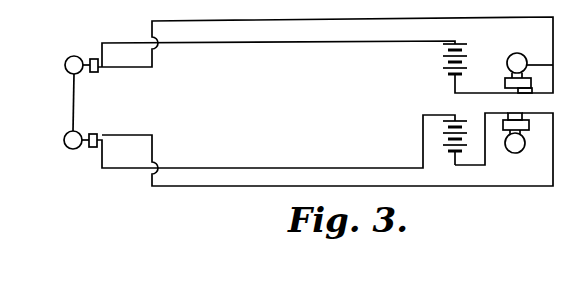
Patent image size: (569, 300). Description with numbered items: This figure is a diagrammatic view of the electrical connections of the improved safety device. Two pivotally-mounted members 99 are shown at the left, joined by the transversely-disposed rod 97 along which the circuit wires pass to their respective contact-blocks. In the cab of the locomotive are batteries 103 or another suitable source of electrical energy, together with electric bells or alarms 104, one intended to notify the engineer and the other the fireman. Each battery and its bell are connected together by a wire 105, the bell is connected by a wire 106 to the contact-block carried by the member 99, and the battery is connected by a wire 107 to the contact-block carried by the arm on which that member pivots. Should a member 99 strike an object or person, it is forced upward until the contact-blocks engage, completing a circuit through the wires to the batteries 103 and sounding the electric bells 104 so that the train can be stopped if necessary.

The transversely-disposed rod 97 is at (77, 98).
The pivotally-mounted member 99 is at (75, 56).
The battery 103 is at (461, 106).
The electric bell 104 is at (529, 112).
The wire connecting battery and bell 105 is at (481, 130).
The wire connecting bell to contact-block 106 is at (386, 21).
The wire connecting battery to contact-block 107 is at (377, 42).